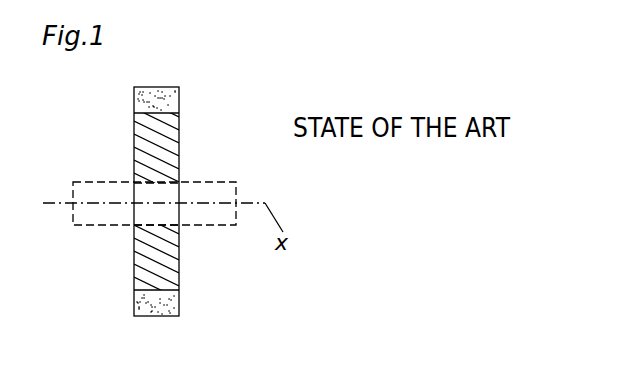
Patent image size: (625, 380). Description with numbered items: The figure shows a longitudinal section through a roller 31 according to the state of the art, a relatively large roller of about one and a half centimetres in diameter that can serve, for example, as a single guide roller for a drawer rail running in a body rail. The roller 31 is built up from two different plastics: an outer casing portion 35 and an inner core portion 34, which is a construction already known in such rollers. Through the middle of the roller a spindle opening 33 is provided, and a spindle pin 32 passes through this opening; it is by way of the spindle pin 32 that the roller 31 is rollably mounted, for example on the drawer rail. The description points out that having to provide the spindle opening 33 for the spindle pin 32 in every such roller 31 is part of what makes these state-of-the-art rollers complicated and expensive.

The roller 31 is at (100, 148).
The spindle pin 32 is at (202, 213).
The spindle opening 33 is at (147, 215).
The core portion 34 is at (172, 135).
The casing portion 35 is at (168, 102).